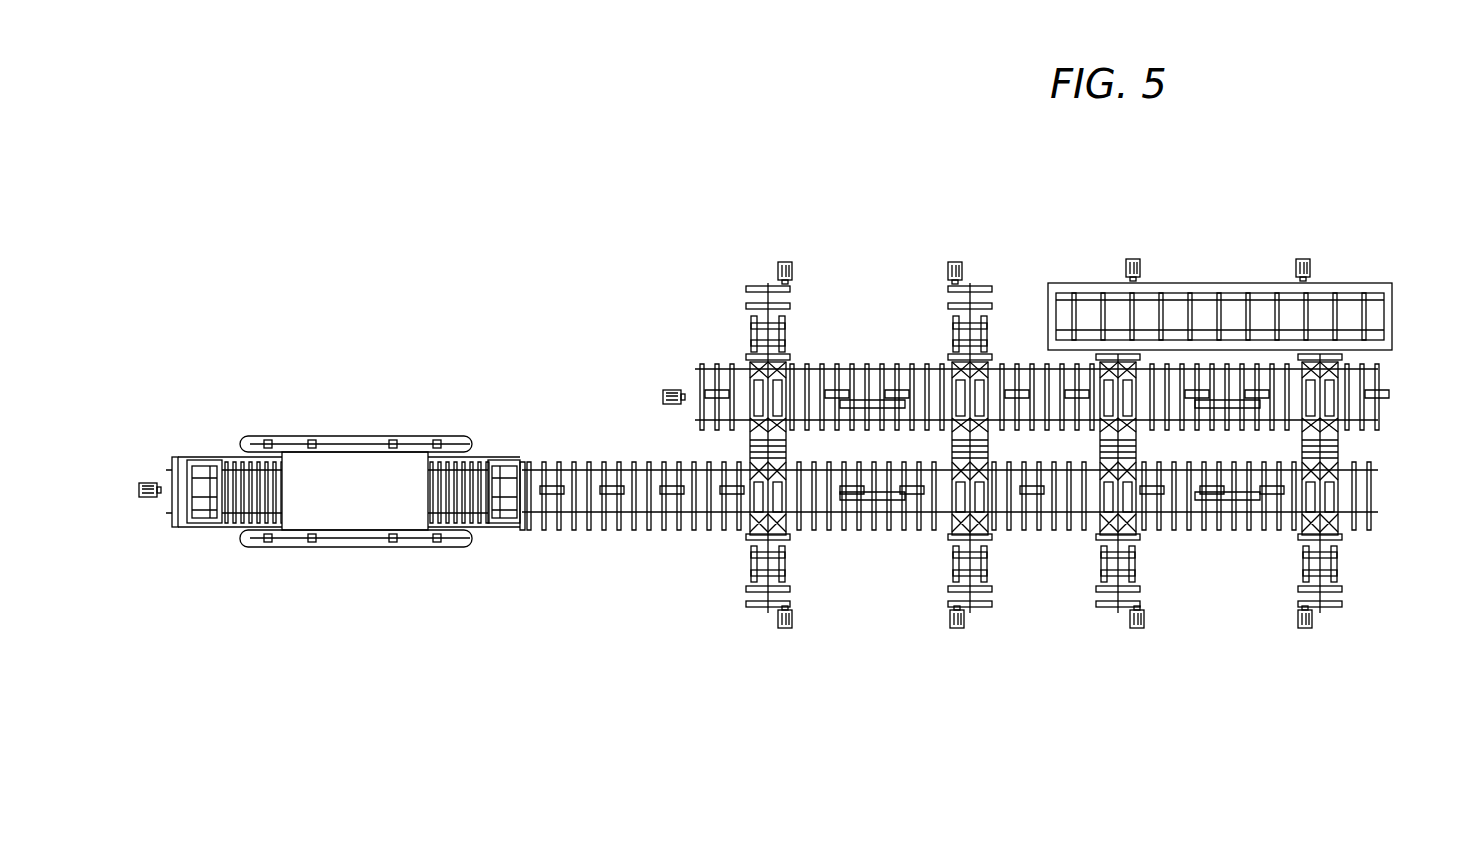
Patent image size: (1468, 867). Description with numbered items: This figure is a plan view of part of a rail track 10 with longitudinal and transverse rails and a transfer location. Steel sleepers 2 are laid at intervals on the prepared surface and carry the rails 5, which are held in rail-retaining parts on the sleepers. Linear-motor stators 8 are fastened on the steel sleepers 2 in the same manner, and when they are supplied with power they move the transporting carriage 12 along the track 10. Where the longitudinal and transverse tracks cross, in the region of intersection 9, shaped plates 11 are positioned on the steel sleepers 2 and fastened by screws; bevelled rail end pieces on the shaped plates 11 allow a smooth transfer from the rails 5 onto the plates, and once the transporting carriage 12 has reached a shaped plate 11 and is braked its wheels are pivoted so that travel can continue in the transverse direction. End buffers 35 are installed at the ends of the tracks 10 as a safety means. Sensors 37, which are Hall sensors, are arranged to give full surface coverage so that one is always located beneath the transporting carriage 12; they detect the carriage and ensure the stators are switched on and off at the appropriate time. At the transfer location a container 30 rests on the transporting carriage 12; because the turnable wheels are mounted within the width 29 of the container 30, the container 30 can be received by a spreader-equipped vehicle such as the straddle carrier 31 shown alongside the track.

The steel sleepers 2 is at (700, 530).
The rails 5 is at (632, 492).
The linear-motor stators 8 is at (545, 482).
The region of intersection 9 is at (933, 540).
The track 10 is at (1118, 614).
The shaped plates 11 is at (755, 360).
The transporting carriage 12 is at (1215, 280).
The width 29 is at (253, 503).
The container 30 is at (233, 482).
The straddle carrier 31 is at (360, 437).
The end buffers 35 is at (148, 481).
The sensors 37 is at (633, 500).